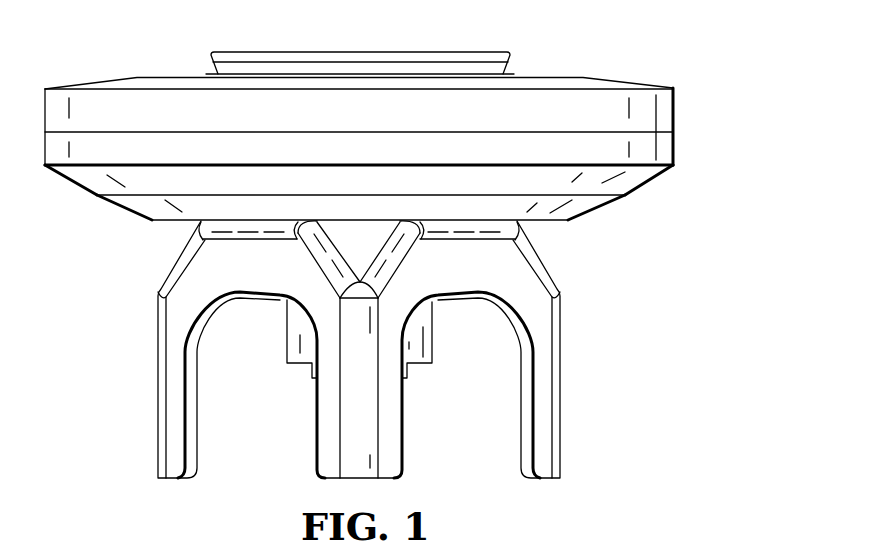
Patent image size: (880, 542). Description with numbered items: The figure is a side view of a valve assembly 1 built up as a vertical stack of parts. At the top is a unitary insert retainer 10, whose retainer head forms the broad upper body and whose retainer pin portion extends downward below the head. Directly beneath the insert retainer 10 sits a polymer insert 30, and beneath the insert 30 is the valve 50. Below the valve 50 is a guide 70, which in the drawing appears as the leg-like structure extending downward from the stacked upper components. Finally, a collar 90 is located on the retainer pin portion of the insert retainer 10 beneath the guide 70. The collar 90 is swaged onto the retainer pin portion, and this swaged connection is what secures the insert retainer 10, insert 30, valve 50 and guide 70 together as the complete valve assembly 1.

The valve assembly 1 is at (399, 244).
The insert retainer 10 is at (108, 78).
The polymer insert 30 is at (70, 183).
The valve 50 is at (587, 212).
The guide 70 is at (560, 388).
The collar 90 is at (423, 367).